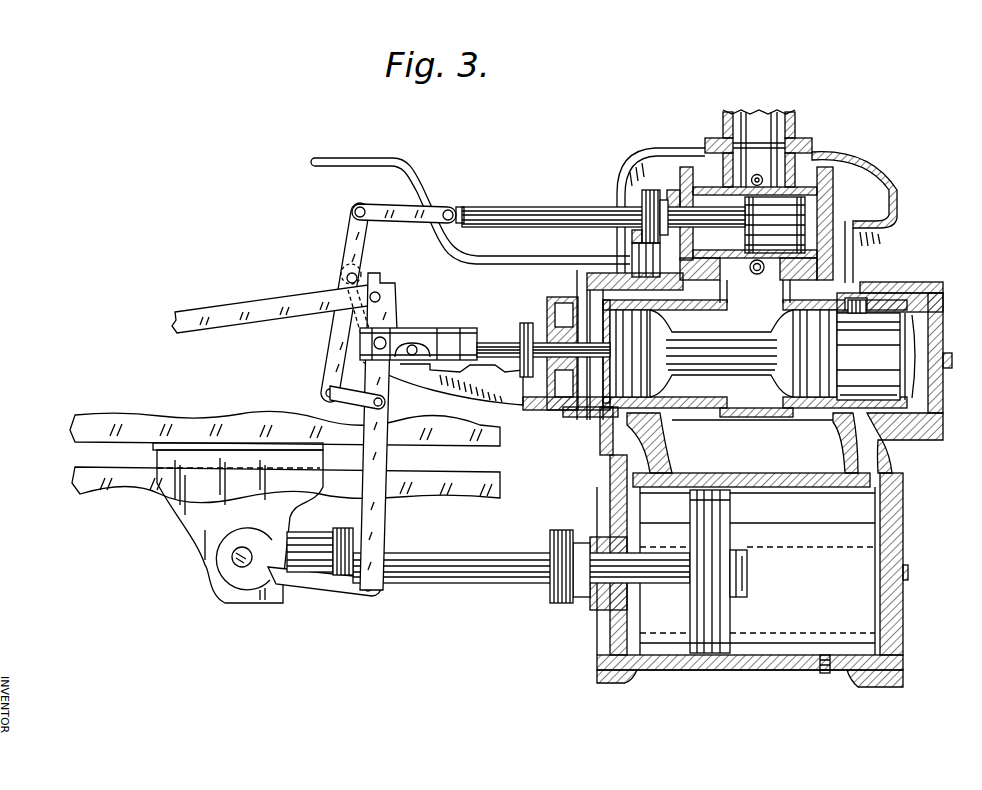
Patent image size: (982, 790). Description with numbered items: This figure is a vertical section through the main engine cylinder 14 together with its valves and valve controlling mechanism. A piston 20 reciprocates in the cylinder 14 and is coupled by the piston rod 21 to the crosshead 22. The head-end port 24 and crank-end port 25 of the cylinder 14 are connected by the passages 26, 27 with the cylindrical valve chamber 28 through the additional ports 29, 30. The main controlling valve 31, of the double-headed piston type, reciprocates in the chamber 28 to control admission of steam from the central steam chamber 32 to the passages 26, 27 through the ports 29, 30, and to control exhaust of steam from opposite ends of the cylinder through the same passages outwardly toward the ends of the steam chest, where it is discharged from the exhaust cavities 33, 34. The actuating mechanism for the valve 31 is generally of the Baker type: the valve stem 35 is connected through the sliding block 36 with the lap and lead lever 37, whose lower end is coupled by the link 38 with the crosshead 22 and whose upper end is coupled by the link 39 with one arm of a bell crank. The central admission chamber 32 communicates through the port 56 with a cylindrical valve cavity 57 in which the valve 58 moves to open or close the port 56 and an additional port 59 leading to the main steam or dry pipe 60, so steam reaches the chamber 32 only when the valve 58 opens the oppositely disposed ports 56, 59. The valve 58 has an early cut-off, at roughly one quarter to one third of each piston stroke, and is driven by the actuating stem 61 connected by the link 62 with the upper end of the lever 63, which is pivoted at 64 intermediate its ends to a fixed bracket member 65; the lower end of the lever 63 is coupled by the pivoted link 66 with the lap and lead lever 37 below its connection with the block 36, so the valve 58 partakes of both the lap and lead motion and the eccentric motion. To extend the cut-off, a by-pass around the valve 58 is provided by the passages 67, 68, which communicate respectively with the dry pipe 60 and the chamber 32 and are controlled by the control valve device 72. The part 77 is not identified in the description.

The main engine cylinder 14 is at (790, 669).
The piston 20 is at (690, 648).
The piston rod 21 is at (515, 585).
The crosshead 22 is at (207, 517).
The head-end port 24 is at (893, 527).
The crank-end port 25 is at (608, 518).
The passage 26 is at (868, 457).
The passage 27 is at (643, 437).
The cylindrical valve chamber 28 is at (895, 312).
The port 29 is at (857, 312).
The port 30 is at (630, 428).
The main controlling valve 31 is at (782, 409).
The central steam chamber 32 is at (752, 375).
The exhaust cavity 33 is at (933, 341).
The exhaust cavity 34 is at (572, 290).
The valve stem 35 is at (488, 343).
The sliding block 36 is at (416, 340).
The lap and lead lever 37 is at (388, 412).
The link 38 is at (328, 586).
The link 39 is at (257, 304).
The port 56 is at (750, 265).
The cylindrical valve cavity 57 is at (697, 167).
The valve 58 is at (833, 190).
The port 59 is at (795, 183).
The main steam or dry pipe 60 is at (789, 118).
The actuating stem 61 is at (490, 208).
The link 62 is at (390, 206).
The lever 63 is at (347, 249).
The pivot 64 is at (357, 277).
The fixed bracket member 65 is at (360, 318).
The pivoted link 66 is at (338, 405).
The by-pass passage 67 is at (759, 174).
The by-pass passage 68 is at (760, 273).
The control valve device 72 is at (637, 247).
The pipe 77 is at (333, 162).